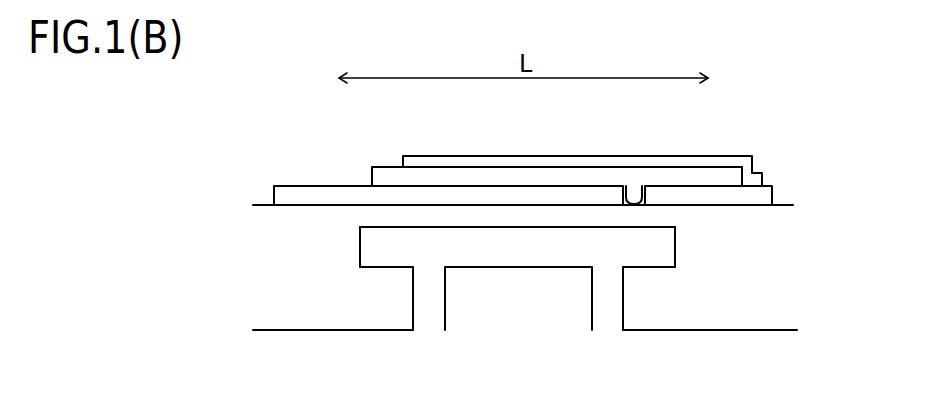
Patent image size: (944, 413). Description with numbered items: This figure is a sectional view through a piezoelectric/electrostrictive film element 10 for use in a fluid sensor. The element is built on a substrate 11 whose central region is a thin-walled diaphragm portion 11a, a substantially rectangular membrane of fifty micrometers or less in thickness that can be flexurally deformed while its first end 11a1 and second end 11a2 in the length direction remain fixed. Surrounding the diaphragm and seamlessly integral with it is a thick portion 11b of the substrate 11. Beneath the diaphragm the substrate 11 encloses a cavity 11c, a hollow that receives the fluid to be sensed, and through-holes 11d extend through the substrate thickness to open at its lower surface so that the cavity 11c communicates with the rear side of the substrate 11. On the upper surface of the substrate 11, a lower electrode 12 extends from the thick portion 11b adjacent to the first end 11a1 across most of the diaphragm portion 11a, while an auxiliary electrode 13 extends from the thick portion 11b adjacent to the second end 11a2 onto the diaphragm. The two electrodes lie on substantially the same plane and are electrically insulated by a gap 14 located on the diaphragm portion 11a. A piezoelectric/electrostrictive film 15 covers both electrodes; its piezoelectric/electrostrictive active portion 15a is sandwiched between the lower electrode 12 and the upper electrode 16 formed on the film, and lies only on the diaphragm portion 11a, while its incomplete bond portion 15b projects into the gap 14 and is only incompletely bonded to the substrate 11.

The piezoelectric/electrostrictive film element 10 is at (848, 165).
The substrate 11 is at (263, 205).
The thin-walled diaphragm portion 11a is at (552, 210).
The first end 11a1 is at (362, 217).
The second end 11a2 is at (673, 213).
The thick portion 11b is at (294, 326).
The cavity 11c is at (643, 250).
The through-holes 11d is at (425, 327).
The lower electrode 12 is at (296, 192).
The auxiliary electrode 13 is at (770, 187).
The gap 14 is at (643, 206).
The piezoelectric/electrostrictive film 15 is at (383, 165).
The piezoelectric/electrostrictive active portion 15a is at (478, 177).
The incomplete bond portion 15b is at (635, 190).
The upper electrode 16 is at (436, 157).